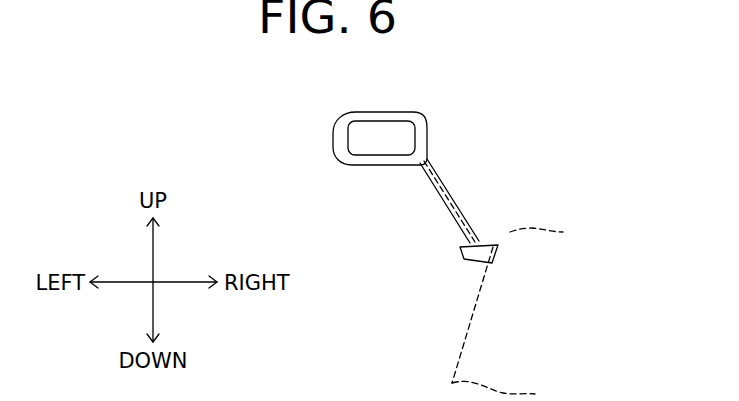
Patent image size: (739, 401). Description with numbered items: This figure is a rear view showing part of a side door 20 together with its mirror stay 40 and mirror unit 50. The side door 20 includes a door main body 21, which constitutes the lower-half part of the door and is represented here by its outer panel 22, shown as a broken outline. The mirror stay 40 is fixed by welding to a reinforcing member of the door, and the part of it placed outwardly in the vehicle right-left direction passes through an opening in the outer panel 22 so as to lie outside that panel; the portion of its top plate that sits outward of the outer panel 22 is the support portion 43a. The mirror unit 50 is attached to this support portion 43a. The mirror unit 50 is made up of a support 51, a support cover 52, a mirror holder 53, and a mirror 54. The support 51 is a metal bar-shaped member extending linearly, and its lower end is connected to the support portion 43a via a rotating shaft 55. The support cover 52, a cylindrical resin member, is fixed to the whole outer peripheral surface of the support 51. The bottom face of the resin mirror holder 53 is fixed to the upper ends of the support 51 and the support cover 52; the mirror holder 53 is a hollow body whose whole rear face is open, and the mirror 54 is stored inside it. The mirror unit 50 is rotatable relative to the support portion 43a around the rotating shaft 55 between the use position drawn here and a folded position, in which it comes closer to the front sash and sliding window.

The side door 20 is at (473, 300).
The door main body 21 is at (462, 331).
The outer panel 22 is at (455, 361).
The mirror stay 40 is at (465, 257).
The support portion 43a is at (490, 245).
The mirror unit 50 is at (463, 149).
The support 51 is at (448, 220).
The support cover 52 is at (452, 188).
The mirror holder 53 is at (355, 112).
The mirror 54 is at (360, 147).
The rotating shaft 55 is at (498, 250).